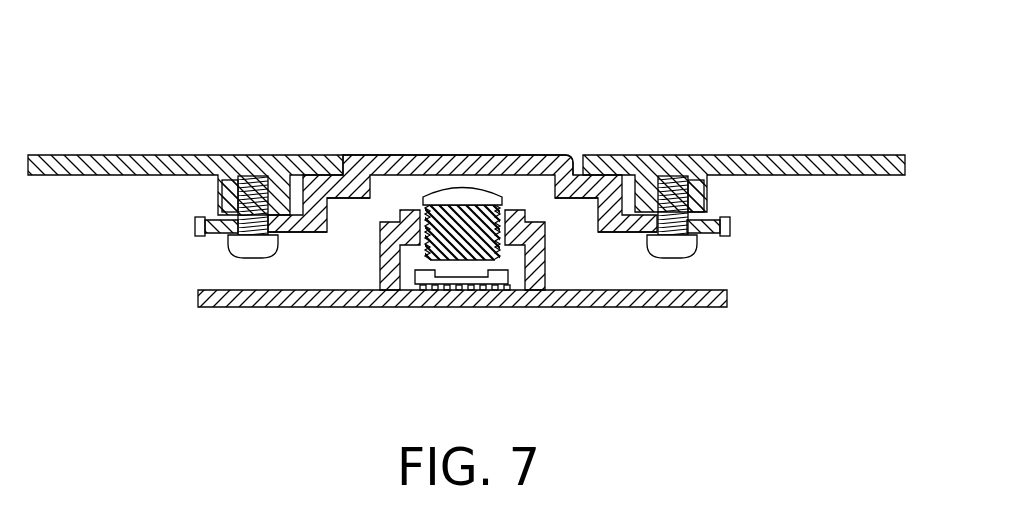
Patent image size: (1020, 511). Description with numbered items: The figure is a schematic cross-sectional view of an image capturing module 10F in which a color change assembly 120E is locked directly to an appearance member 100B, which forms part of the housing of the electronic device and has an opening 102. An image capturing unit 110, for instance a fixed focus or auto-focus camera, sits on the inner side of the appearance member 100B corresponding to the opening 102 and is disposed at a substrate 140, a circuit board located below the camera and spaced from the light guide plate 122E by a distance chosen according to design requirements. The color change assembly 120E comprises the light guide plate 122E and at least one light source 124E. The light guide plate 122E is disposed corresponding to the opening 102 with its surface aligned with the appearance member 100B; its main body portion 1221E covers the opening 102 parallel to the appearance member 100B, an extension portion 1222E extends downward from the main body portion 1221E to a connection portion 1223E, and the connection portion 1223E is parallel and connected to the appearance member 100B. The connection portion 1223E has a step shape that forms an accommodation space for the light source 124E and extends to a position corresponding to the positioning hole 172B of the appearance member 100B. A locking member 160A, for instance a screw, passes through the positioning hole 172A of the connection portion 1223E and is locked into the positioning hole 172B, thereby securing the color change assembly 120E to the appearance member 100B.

The image capturing module 10F is at (118, 93).
The appearance member 100B is at (689, 155).
The opening 102 is at (349, 154).
The image capturing unit 110 is at (460, 250).
The color change assembly 120E is at (470, 186).
The light guide plate 122E is at (431, 146).
The main body portion 1221E is at (526, 155).
The extension portion 1222E is at (587, 190).
The connection portion 1223E is at (602, 232).
The light source 124E is at (233, 224).
The substrate 140 is at (248, 293).
The locking member 160A is at (677, 247).
The positioning hole of the light guide plate 172A is at (232, 197).
The positioning hole of the appearance member 172B is at (233, 189).